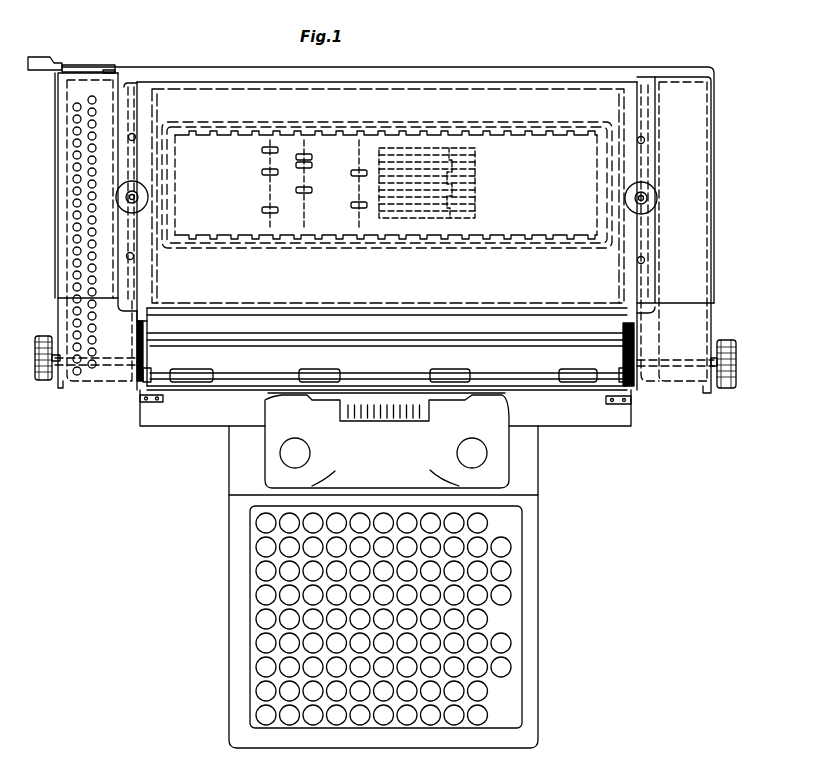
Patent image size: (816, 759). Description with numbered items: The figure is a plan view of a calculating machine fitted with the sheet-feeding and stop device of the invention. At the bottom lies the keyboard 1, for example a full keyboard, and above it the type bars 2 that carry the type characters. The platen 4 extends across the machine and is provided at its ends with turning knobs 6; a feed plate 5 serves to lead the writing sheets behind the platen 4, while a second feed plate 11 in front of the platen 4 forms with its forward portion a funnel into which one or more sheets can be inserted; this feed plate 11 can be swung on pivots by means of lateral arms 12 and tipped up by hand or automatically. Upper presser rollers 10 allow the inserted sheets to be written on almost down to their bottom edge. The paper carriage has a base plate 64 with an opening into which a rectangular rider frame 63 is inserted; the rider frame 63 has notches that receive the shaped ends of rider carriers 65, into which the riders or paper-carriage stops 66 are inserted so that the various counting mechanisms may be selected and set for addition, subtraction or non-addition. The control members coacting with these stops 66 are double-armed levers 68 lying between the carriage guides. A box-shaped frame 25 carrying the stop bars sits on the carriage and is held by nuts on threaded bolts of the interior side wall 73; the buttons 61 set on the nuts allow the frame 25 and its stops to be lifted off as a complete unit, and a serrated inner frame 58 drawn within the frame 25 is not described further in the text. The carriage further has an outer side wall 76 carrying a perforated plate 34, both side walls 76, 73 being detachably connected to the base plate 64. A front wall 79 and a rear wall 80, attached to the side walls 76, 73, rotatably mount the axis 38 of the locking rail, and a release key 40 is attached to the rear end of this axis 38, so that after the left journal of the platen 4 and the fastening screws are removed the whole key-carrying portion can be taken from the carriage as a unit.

The keyboard 1 is at (303, 633).
The type bars 2 is at (215, 75).
The platen 4 is at (379, 356).
The feed plate 5 is at (242, 320).
The turning knobs 6 is at (43, 381).
The upper presser rollers 10 is at (315, 371).
The feed plate 11 is at (574, 416).
The lateral arms 12 is at (137, 386).
The frame 25 is at (233, 90).
The perforated side plate 34 is at (78, 250).
The axis 38 is at (108, 65).
The release key 40 is at (38, 64).
The serrated frame 58 is at (538, 133).
The buttons 61 is at (142, 193).
The rider frame 63 is at (599, 177).
The base plate 64 is at (419, 70).
The rider carriers 65 is at (268, 197).
The paper-carriage stops 66 is at (263, 152).
The double-armed levers 68 is at (475, 190).
The side wall 73 is at (137, 291).
The outer side wall 76 is at (62, 328).
The front wall 79 is at (97, 380).
The rear wall 80 is at (133, 77).